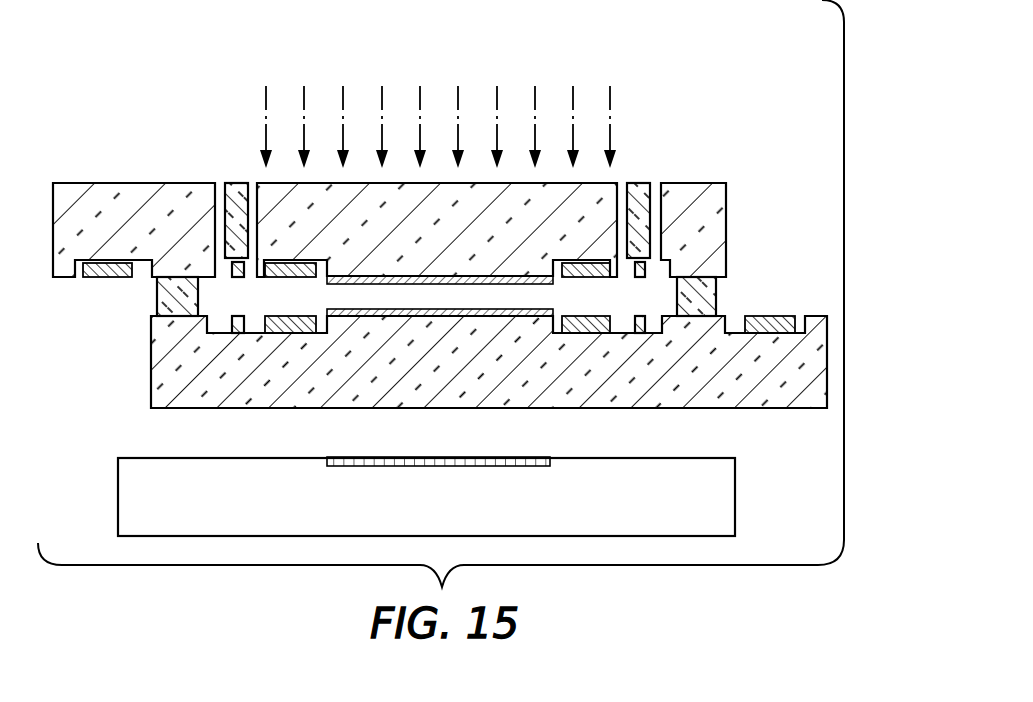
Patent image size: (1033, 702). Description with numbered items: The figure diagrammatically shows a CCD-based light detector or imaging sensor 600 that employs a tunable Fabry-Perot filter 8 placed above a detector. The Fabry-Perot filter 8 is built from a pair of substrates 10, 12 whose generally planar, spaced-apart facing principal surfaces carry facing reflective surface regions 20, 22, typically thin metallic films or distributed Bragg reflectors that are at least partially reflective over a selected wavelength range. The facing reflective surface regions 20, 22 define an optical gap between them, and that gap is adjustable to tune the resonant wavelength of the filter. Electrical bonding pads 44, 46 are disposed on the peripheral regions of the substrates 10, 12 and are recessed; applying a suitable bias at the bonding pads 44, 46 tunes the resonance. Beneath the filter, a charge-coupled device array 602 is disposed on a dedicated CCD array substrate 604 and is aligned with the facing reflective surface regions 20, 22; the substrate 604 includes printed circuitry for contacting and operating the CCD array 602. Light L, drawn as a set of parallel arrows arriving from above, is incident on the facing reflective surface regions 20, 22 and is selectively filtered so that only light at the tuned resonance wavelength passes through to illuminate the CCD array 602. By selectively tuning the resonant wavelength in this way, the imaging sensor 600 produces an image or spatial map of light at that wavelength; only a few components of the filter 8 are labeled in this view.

The tunable Fabry-Perot filter 8 is at (88, 156).
The substrate 10 is at (722, 226).
The substrate 12 is at (152, 376).
The facing reflective surface region 20 is at (347, 284).
The facing reflective surface region 22 is at (538, 308).
The electrical bonding pad 44 is at (103, 280).
The electrical bonding pad 46 is at (770, 318).
The CCD-based imaging sensor 600 is at (733, 54).
The charge-coupled device (CCD) array 602 is at (320, 460).
The dedicated CCD array substrate 604 is at (118, 497).
The light L is at (303, 106).